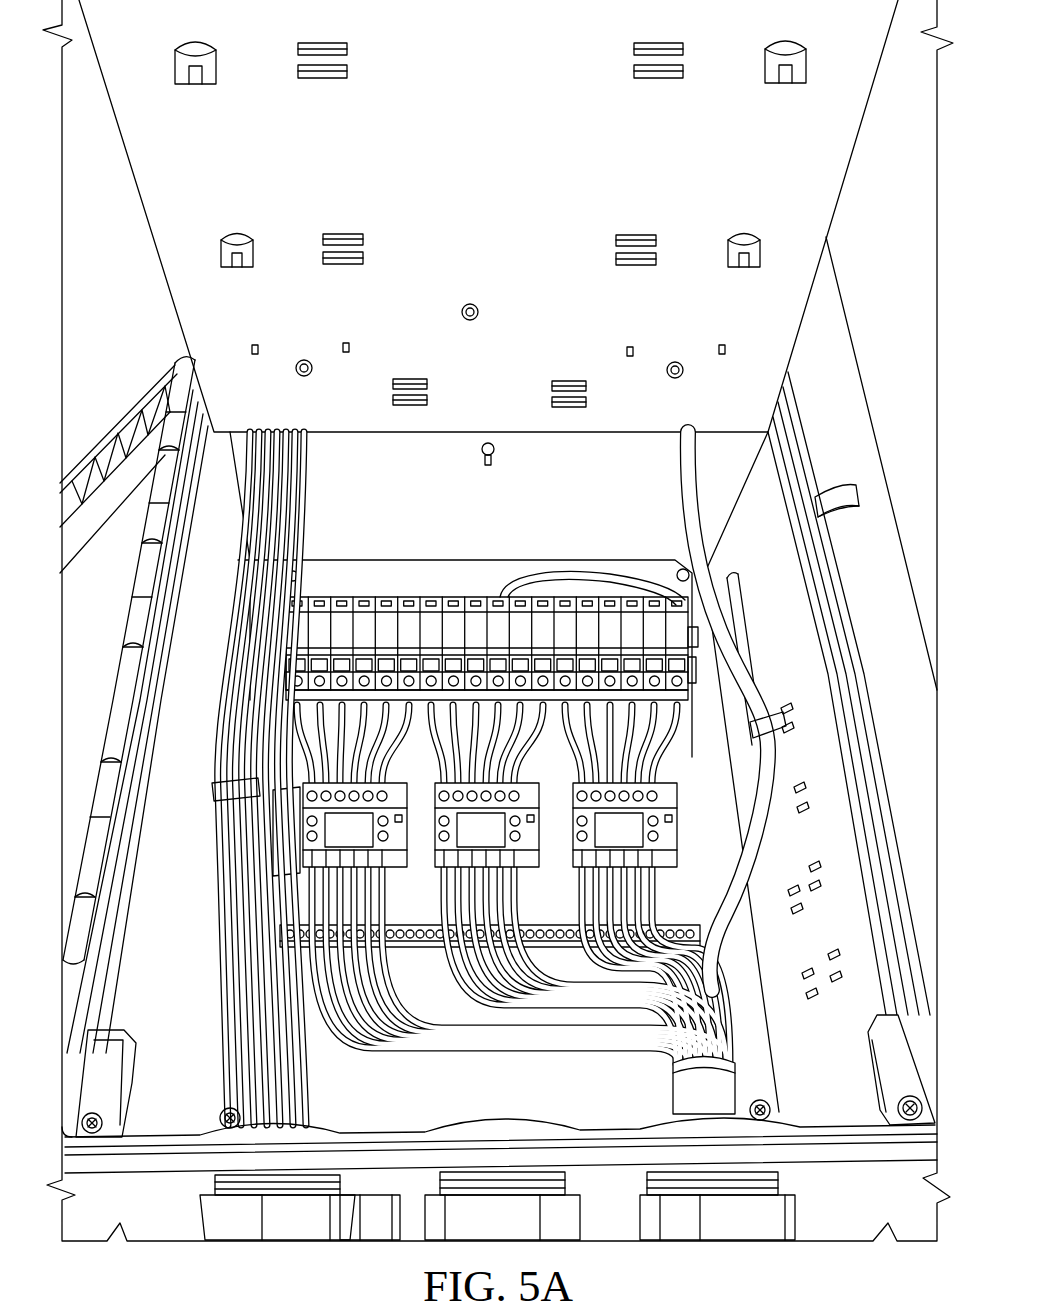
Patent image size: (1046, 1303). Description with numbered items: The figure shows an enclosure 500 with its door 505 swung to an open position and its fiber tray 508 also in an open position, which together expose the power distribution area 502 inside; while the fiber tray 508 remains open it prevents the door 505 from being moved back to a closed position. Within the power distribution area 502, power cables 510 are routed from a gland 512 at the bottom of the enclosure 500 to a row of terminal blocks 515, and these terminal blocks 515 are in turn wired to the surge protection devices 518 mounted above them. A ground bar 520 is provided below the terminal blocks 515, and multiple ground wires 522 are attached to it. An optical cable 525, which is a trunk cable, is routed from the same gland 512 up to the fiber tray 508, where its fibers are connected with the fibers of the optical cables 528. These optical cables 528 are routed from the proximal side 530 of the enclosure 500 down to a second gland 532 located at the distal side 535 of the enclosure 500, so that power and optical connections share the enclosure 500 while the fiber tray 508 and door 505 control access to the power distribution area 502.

The enclosure 500 is at (856, 400).
The power distribution area 502 is at (465, 1091).
The door 505 is at (82, 591).
The fiber tray 508 is at (468, 268).
The power cables 510 is at (598, 1000).
The gland 512 is at (723, 1228).
The terminal blocks 515 is at (326, 838).
The surge protection devices 518 is at (505, 646).
The ground bar 520 is at (425, 946).
The ground wires 522 is at (482, 878).
The optical cable 525 is at (746, 700).
The optical cables 528 is at (258, 491).
The proximal side 530 is at (553, 513).
The gland 532 is at (278, 1234).
The distal side 535 is at (368, 1169).